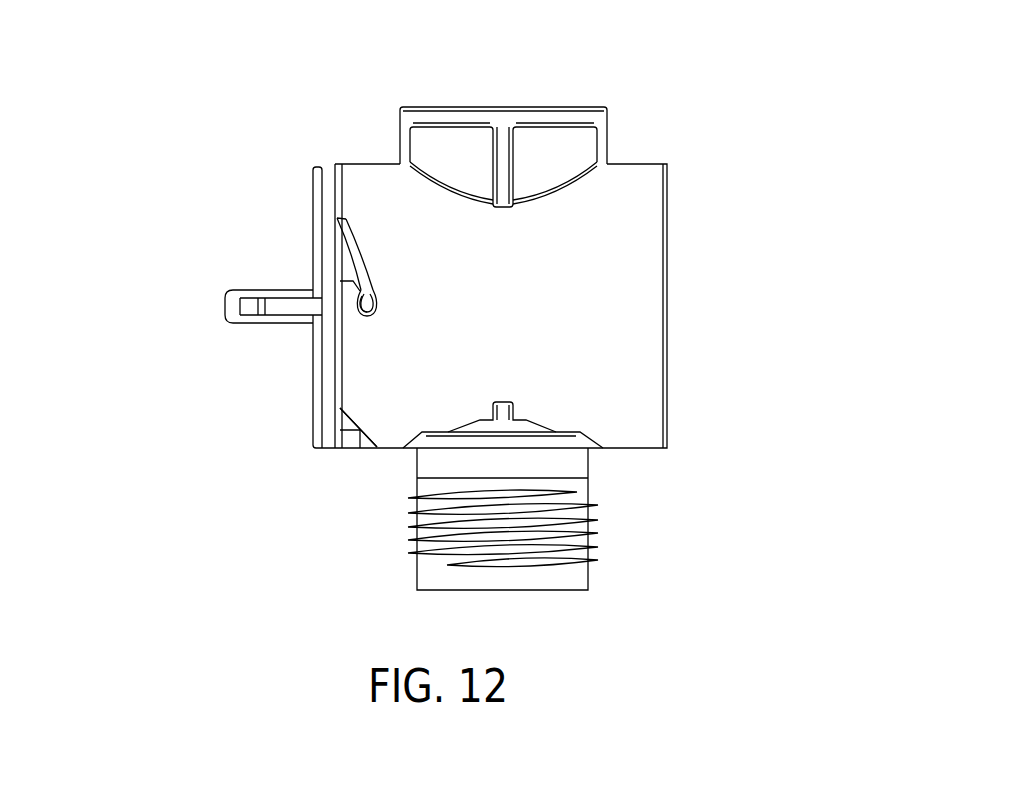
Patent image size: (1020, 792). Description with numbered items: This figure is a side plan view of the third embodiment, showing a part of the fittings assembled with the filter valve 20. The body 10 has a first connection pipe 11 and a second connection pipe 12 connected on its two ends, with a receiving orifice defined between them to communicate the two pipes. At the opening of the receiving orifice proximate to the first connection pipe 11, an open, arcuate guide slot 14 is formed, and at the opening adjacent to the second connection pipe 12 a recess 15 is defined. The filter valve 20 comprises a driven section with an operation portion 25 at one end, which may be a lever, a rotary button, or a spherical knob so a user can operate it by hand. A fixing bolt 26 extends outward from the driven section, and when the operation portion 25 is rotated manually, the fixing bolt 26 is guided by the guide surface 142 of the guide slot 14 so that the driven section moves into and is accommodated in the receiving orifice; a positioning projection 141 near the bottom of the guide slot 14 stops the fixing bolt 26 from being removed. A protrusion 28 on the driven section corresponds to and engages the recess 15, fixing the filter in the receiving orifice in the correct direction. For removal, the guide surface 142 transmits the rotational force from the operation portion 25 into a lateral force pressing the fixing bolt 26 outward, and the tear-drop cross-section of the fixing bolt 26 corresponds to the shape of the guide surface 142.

The body 10 is at (645, 132).
The first connection pipe 11 is at (480, 113).
The second connection pipe 12 is at (540, 592).
The guide slot 14 is at (368, 290).
The positioning projection 141 is at (365, 291).
The guide surface 142 is at (342, 233).
The recess 15 is at (353, 438).
The protrusion 28 is at (358, 427).
The filter valve 20 is at (227, 277).
The operation portion 25 is at (235, 303).
The fixing bolt 26 is at (365, 308).